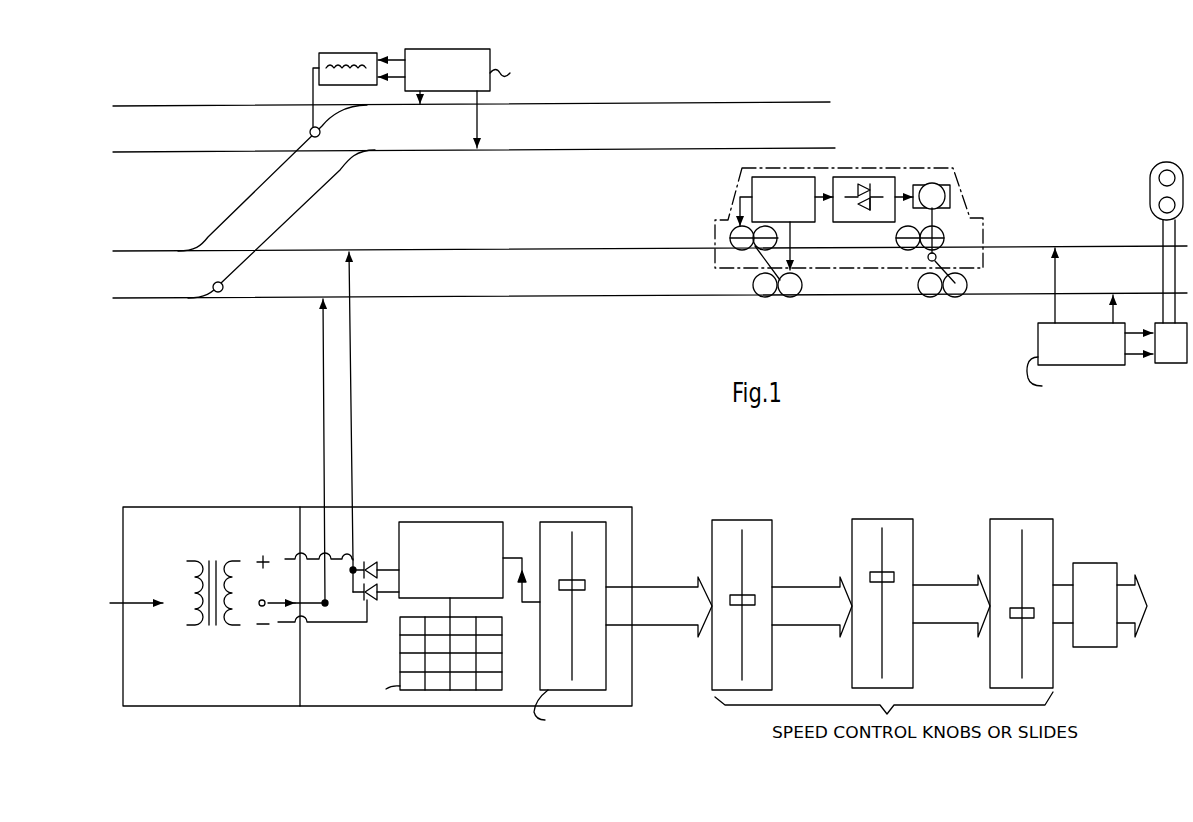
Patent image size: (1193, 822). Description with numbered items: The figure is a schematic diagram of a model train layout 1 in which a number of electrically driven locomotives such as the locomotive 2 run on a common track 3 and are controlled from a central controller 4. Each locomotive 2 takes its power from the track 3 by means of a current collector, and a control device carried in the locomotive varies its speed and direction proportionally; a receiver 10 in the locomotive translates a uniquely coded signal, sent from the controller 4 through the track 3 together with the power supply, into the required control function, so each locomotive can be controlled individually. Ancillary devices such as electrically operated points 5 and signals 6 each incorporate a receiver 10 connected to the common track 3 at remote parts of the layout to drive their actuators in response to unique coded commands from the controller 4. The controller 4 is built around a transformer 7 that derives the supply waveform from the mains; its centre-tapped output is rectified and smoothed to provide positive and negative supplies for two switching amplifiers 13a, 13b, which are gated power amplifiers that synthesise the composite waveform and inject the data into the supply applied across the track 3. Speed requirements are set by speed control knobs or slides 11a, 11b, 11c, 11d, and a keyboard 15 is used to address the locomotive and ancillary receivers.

The model train layout 1 is at (918, 97).
The locomotive 2 is at (966, 206).
The track 3 is at (546, 250).
The controller 4 is at (565, 507).
The points 5 is at (459, 33).
The signals 6 is at (1150, 168).
The transformer 7 is at (223, 518).
The receiver 10 is at (456, 79).
The speed control knob or slide 11a is at (606, 548).
The speed control knob or slide 11b is at (760, 520).
The speed control knob or slide 11c is at (893, 519).
The speed control knob or slide 11d is at (1005, 519).
The switching amplifier 13a is at (369, 554).
The switching amplifier 13b is at (367, 601).
The keyboard 15 is at (400, 648).